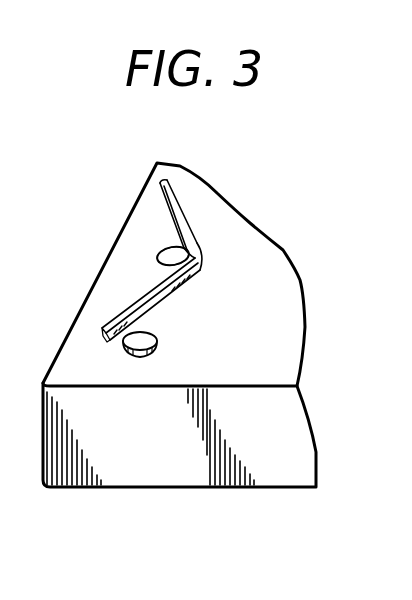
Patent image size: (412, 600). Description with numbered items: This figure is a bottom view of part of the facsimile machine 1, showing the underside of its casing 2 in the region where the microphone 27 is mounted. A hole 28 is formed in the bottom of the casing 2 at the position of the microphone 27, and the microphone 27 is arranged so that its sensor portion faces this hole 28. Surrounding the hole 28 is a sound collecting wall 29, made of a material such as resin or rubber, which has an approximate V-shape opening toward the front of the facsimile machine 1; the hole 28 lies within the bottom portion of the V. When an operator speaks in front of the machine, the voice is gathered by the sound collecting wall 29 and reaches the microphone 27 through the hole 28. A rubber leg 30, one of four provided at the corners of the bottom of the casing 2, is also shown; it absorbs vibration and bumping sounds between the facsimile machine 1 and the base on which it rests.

The facsimile machine 1 is at (305, 247).
The casing 2 is at (148, 479).
The microphone 27 is at (163, 263).
The hole 28 is at (162, 250).
The sound collecting wall 29 is at (190, 220).
The rubber leg 30 is at (158, 344).